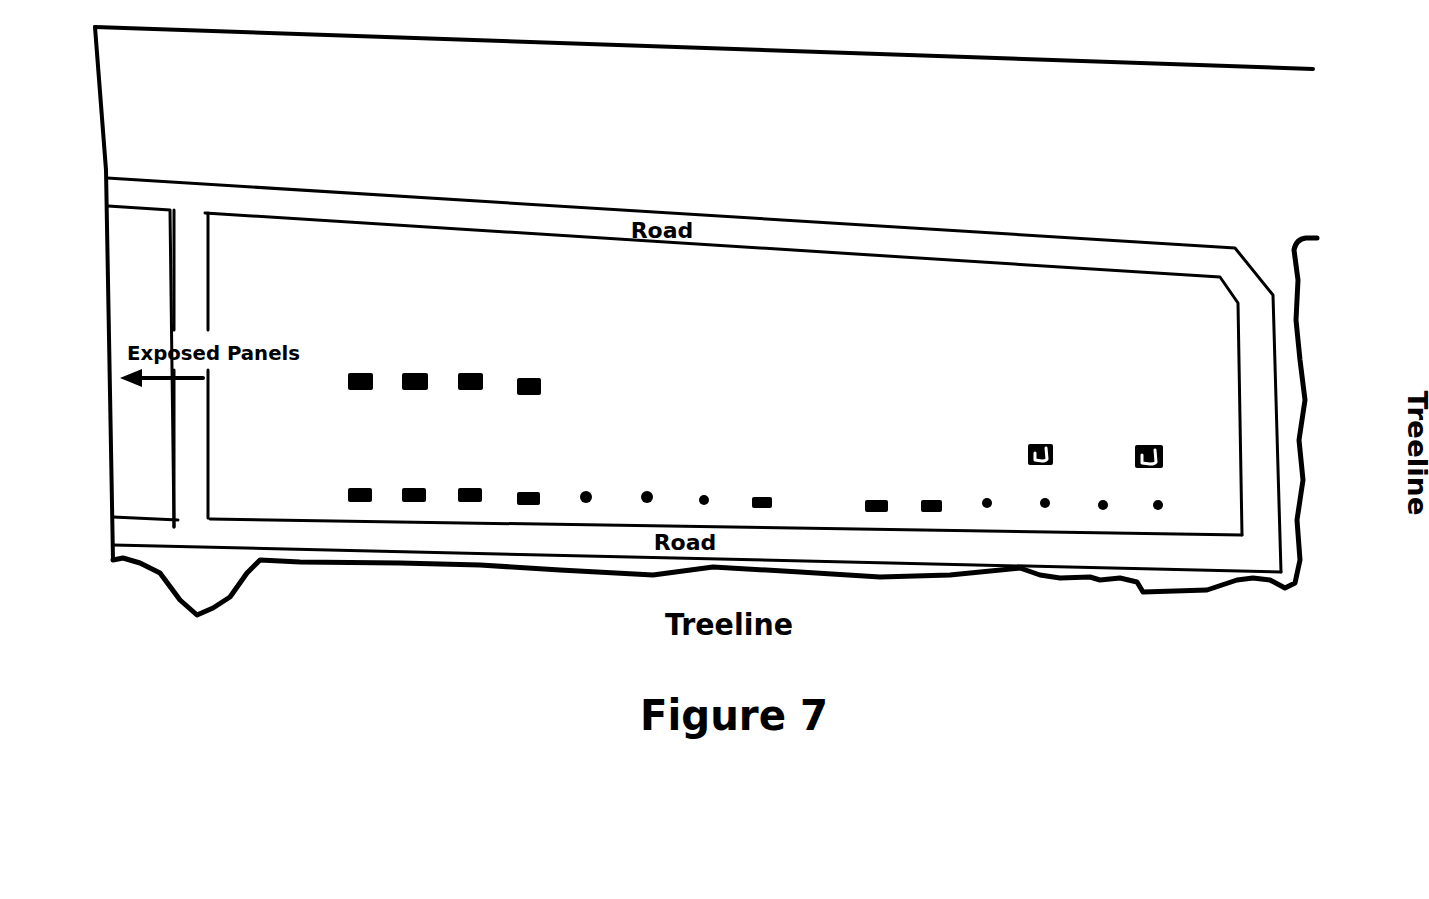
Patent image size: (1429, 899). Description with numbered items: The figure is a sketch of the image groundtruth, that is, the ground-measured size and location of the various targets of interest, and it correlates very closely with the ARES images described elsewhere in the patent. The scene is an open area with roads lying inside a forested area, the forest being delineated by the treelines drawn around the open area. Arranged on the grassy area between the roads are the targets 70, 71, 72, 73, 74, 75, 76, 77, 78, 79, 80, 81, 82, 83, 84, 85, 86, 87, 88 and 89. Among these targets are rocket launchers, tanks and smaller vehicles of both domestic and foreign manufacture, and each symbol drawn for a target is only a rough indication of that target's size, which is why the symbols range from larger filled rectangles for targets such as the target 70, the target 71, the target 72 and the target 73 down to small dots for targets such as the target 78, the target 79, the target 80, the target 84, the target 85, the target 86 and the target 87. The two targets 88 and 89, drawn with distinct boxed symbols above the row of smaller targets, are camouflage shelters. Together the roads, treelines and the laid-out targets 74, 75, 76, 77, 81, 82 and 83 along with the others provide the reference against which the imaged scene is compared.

The target 70 is at (359, 361).
The target 71 is at (415, 361).
The target 72 is at (470, 361).
The target 73 is at (530, 364).
The target 74 is at (358, 476).
The target 75 is at (414, 476).
The target 76 is at (470, 476).
The target 77 is at (530, 477).
The target 78 is at (587, 476).
The target 79 is at (645, 476).
The target 80 is at (702, 477).
The target 81 is at (760, 479).
The target 82 is at (875, 491).
The target 83 is at (934, 491).
The target 84 is at (990, 489).
The target 85 is at (1049, 489).
The target 86 is at (1105, 490).
The target 87 is at (1164, 490).
The camouflage shelter 88 is at (1039, 439).
The camouflage shelter 89 is at (1151, 440).